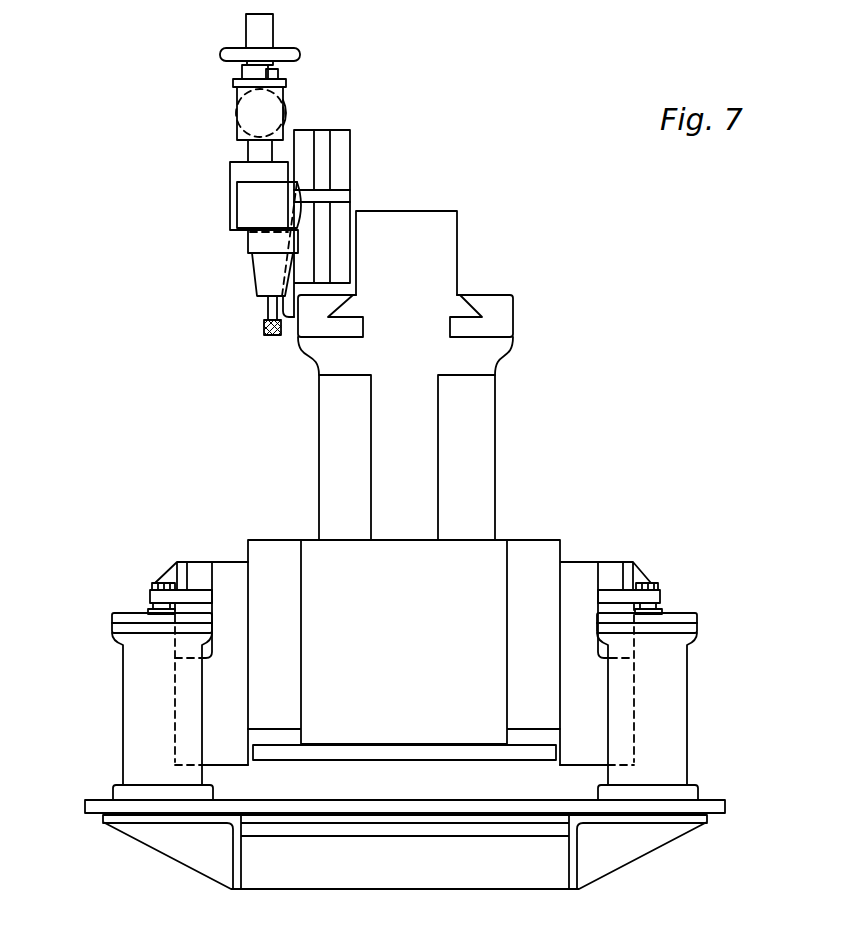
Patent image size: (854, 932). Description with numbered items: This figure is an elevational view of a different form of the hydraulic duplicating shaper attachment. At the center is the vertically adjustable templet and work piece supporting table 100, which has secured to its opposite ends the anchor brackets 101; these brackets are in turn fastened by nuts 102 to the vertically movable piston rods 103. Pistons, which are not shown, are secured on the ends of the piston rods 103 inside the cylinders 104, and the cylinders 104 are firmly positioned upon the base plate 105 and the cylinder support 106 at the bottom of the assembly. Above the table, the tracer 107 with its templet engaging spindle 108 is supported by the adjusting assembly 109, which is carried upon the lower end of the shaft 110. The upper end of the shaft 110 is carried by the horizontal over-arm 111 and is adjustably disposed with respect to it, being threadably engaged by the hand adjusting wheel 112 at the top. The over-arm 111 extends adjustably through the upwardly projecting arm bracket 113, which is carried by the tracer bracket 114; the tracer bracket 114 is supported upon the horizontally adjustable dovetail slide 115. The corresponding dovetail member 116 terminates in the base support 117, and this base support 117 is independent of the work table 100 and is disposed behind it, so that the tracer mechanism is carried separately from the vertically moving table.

The templet and work piece supporting table 100 is at (540, 552).
The anchor brackets 101 is at (198, 572).
The nuts 102 is at (150, 588).
The piston rods 103 is at (150, 607).
The cylinders 104 is at (142, 701).
The base plate 105 is at (97, 800).
The cylinder support 106 is at (205, 860).
The tracer 107 is at (258, 243).
The templet engaging spindle 108 is at (266, 311).
The adjusting assembly 109 is at (238, 178).
The shaft 110 is at (258, 152).
The over-arm 111 is at (258, 115).
The hand adjusting wheel 112 is at (224, 54).
The arm bracket 113 is at (340, 146).
The tracer bracket 114 is at (292, 322).
The dovetail slide 115 is at (506, 316).
The dovetail member 116 is at (433, 292).
The base support 117 is at (472, 441).